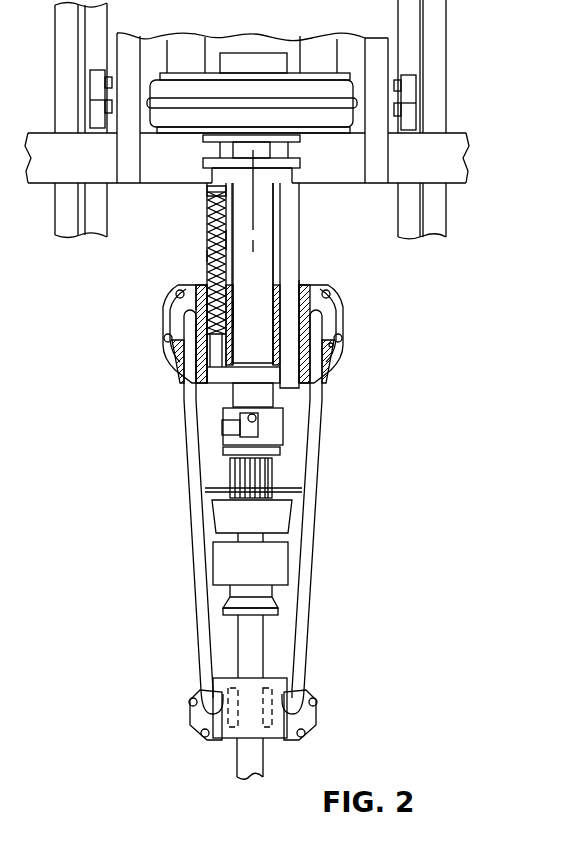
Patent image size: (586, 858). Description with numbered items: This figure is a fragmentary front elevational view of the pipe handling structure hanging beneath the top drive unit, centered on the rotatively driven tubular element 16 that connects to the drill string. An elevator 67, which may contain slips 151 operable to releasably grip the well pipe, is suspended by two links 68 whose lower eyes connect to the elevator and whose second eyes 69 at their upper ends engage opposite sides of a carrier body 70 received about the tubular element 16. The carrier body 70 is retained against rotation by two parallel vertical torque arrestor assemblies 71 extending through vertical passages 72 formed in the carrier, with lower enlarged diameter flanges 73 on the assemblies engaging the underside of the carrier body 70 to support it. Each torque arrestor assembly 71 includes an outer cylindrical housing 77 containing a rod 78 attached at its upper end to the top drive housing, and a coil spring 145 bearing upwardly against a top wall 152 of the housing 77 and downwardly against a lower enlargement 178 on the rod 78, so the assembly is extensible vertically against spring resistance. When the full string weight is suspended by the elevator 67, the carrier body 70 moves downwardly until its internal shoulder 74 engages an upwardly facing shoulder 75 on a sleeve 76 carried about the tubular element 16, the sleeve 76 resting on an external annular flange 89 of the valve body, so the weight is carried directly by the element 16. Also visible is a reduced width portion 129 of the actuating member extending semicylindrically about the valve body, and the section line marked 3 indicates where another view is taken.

The section line 3- 3 is at (252, 150).
The tubular element 16 is at (266, 220).
The elevator 67 is at (304, 706).
The links 68 is at (190, 463).
The second eyes 69 is at (312, 368).
The carrier body 70 is at (306, 289).
The torque arrestor assemblies 71 is at (298, 233).
The vertical passages 72 is at (296, 280).
The lower enlarged diameter flanges 73 is at (283, 383).
The internal shoulder 74 is at (236, 316).
The upwardly facing shoulder 75 is at (253, 331).
The sleeve 76 is at (262, 344).
The outer cylindrical housings 77 is at (192, 280).
The rods 78 is at (207, 256).
The external annular flange 89 is at (222, 412).
The portion of reduced vertical width 129 is at (208, 238).
The coil springs 145 is at (208, 212).
The slips 151 is at (270, 692).
The top walls 152 is at (208, 188).
The lower enlargements 178 is at (176, 356).